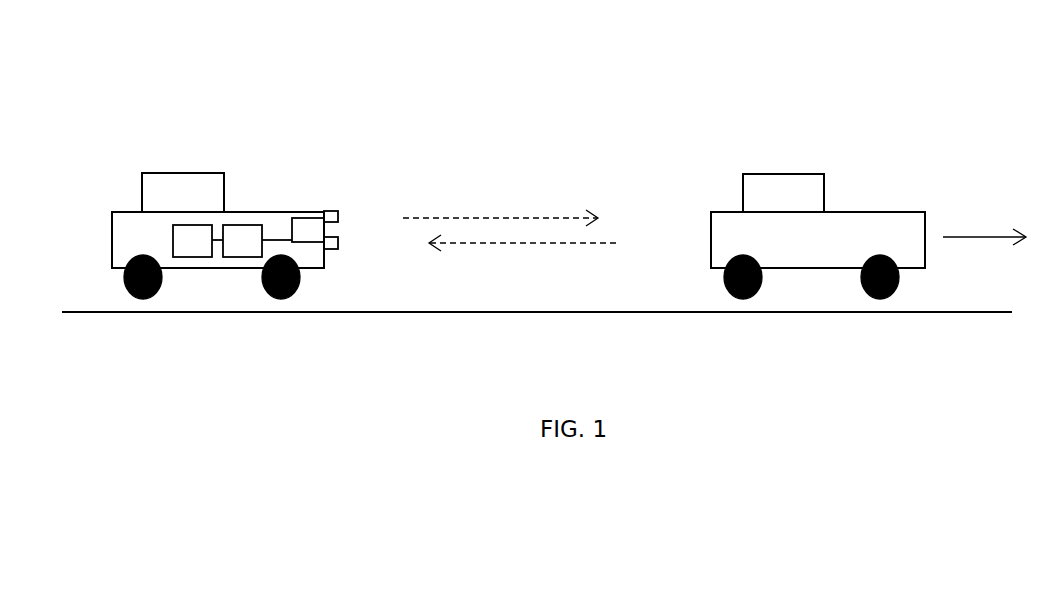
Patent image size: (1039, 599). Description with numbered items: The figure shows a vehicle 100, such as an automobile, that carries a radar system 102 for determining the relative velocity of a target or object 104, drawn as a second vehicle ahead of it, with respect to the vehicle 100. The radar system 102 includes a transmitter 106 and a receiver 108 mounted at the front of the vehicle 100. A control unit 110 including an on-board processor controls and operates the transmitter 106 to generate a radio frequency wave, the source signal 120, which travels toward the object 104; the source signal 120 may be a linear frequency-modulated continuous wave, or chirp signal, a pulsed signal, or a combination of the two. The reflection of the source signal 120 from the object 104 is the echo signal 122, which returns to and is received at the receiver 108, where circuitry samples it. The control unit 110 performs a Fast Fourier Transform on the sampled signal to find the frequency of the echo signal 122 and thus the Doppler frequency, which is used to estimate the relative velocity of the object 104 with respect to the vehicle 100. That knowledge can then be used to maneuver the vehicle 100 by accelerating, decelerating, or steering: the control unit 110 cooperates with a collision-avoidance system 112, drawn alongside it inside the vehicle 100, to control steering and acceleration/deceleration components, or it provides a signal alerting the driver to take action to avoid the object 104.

The vehicle 100 is at (161, 136).
The radar system 102 is at (334, 158).
The object 104 is at (862, 148).
The transmitter 106 is at (338, 212).
The receiver 108 is at (339, 245).
The control unit 110 is at (252, 225).
The collision-avoidance system 112 is at (192, 257).
The source signal 120 is at (495, 217).
The echo signal 122 is at (542, 243).